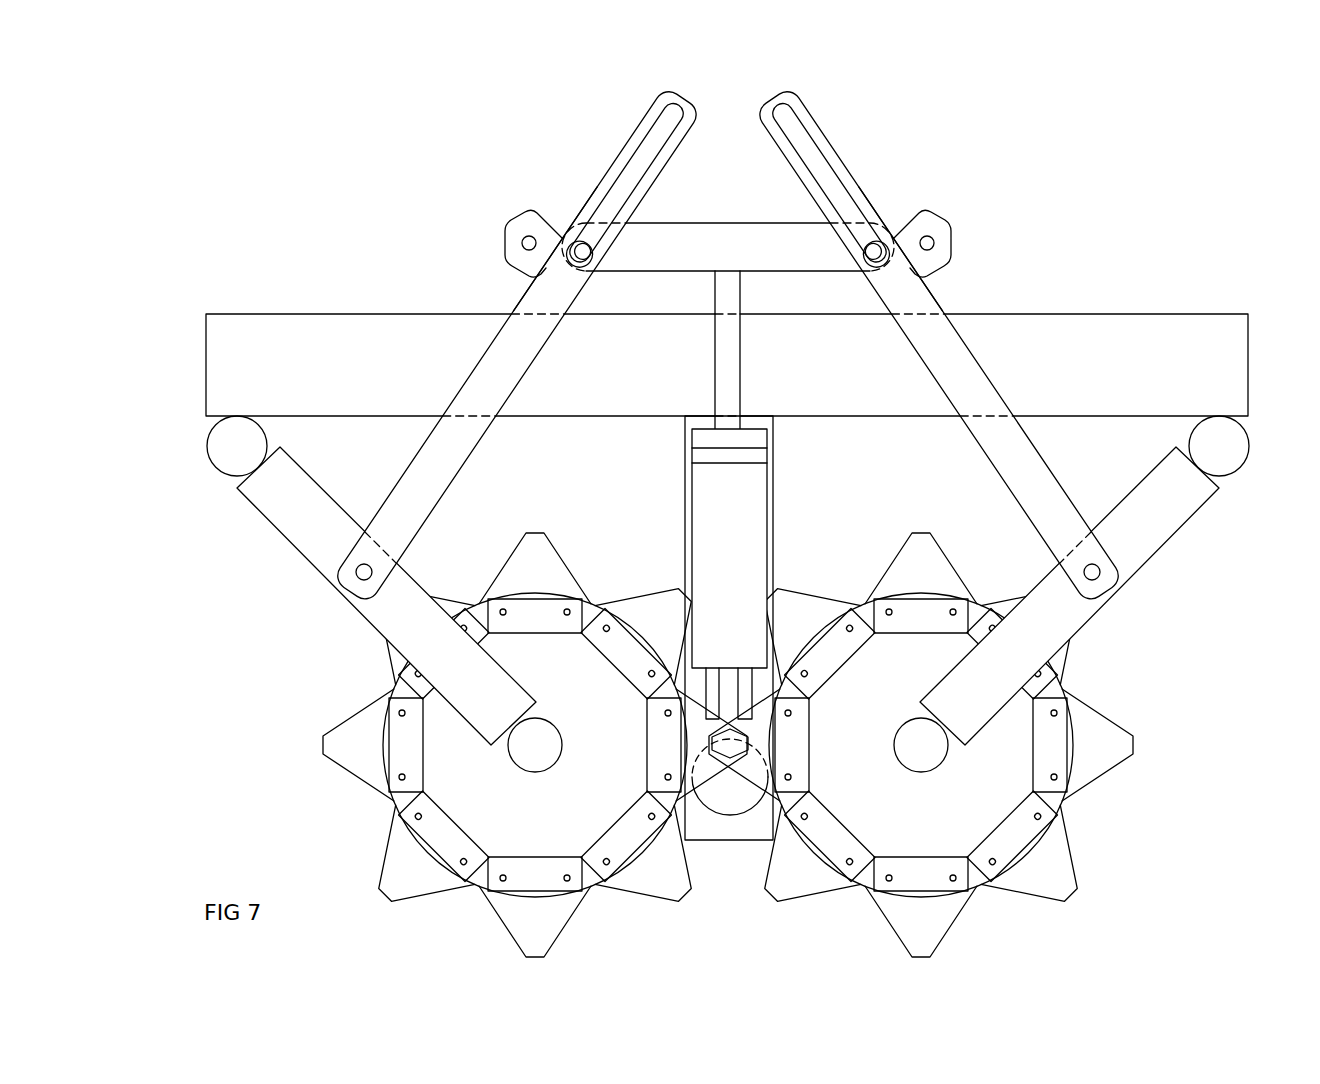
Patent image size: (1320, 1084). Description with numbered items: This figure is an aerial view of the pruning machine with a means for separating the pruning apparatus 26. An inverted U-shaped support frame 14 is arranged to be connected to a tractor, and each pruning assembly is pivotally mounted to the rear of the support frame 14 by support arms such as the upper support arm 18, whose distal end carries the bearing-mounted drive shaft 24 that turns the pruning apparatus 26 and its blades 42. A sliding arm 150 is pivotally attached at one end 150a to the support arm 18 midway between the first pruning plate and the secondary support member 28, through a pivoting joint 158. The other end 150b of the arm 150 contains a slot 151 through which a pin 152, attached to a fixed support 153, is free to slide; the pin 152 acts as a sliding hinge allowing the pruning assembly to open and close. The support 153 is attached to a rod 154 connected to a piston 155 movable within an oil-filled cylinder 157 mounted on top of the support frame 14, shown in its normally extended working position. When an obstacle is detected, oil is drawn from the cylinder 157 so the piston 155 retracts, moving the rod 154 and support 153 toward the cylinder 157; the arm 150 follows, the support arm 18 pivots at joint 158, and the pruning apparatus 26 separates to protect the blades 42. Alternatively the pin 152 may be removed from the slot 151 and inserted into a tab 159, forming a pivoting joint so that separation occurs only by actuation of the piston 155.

The support frame 14 is at (1140, 330).
The upper support arm 18 is at (272, 503).
The drive shaft 24 is at (527, 752).
The pruning apparatus 26 is at (741, 745).
The secondary support member 28 is at (245, 440).
The blade 42 is at (1069, 812).
The sliding arm 150 is at (470, 445).
The one end of the sliding arm 150a is at (410, 530).
The other end of the sliding arm 150b is at (545, 295).
The slot 151 is at (790, 130).
The pin 152 is at (583, 247).
The fixed support 153 is at (795, 250).
The rod 154 is at (722, 368).
The piston 155 is at (760, 452).
The cylinder 157 is at (750, 522).
The pivoting joint 158 is at (360, 575).
The tab 159 is at (529, 243).